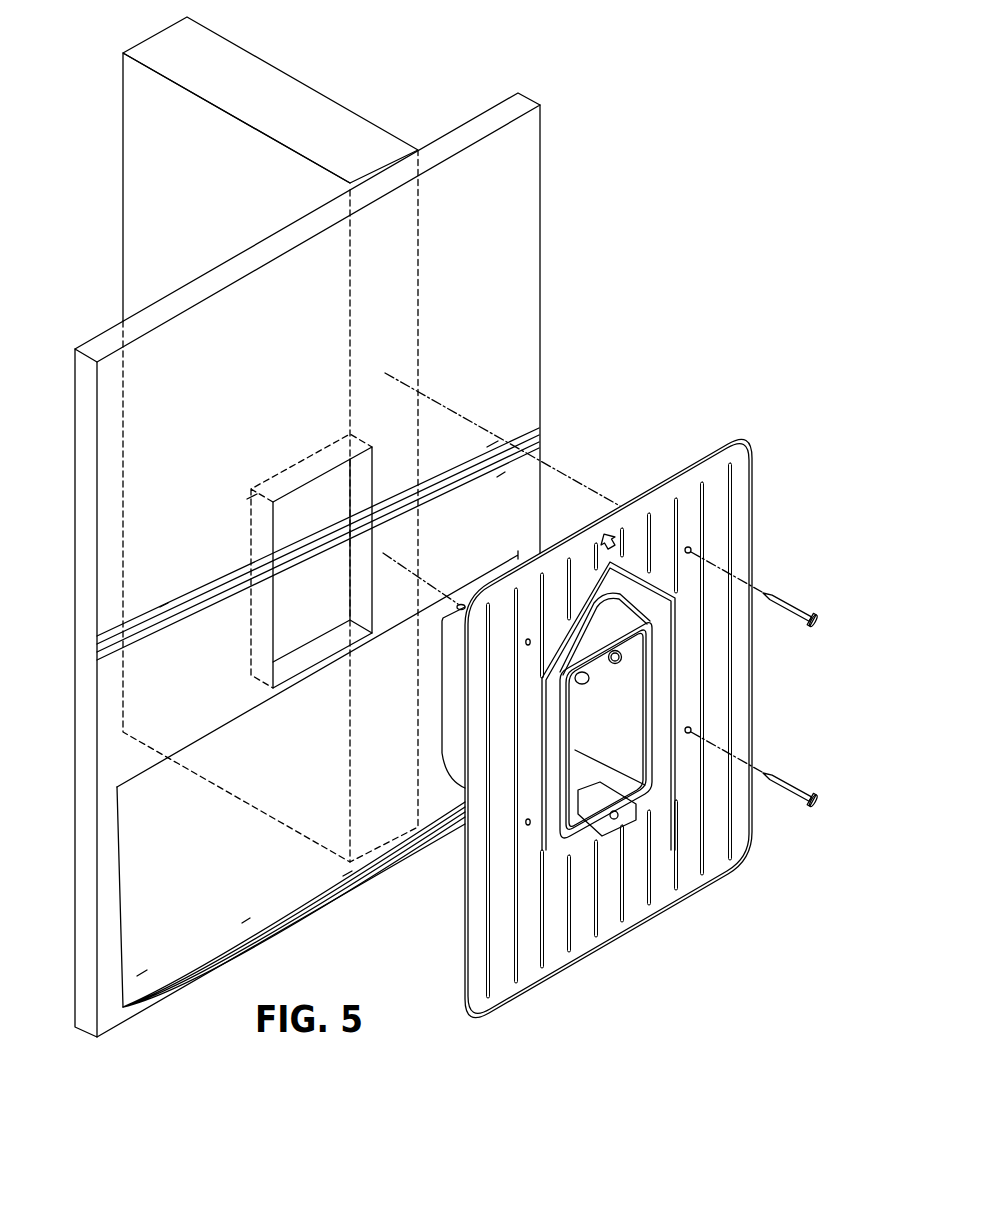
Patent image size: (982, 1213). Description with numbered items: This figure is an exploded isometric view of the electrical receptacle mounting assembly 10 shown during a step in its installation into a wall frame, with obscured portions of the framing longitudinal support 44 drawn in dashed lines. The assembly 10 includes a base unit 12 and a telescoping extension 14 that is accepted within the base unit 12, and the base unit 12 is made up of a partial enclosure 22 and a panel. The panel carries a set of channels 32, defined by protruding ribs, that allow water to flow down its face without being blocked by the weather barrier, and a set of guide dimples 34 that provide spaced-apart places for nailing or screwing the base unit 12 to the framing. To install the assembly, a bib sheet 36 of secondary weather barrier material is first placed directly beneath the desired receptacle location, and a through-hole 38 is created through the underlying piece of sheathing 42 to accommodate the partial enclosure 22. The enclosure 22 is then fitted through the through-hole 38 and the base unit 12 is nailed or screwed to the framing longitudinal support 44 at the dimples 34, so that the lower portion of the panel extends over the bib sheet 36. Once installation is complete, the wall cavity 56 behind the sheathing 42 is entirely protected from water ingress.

The electrical receptacle mounting assembly 10 is at (622, 950).
The base unit 12 is at (752, 500).
The telescoping extension 14 is at (660, 694).
The partial enclosure 22 is at (442, 689).
The channels 32 is at (503, 893).
The guide dimples 34 is at (690, 550).
The sheet 36 is at (203, 736).
The through-hole 38 is at (275, 518).
The sheathing 42 is at (541, 395).
The framing longitudinal support 44 is at (325, 93).
The wall cavity 56 is at (147, 239).